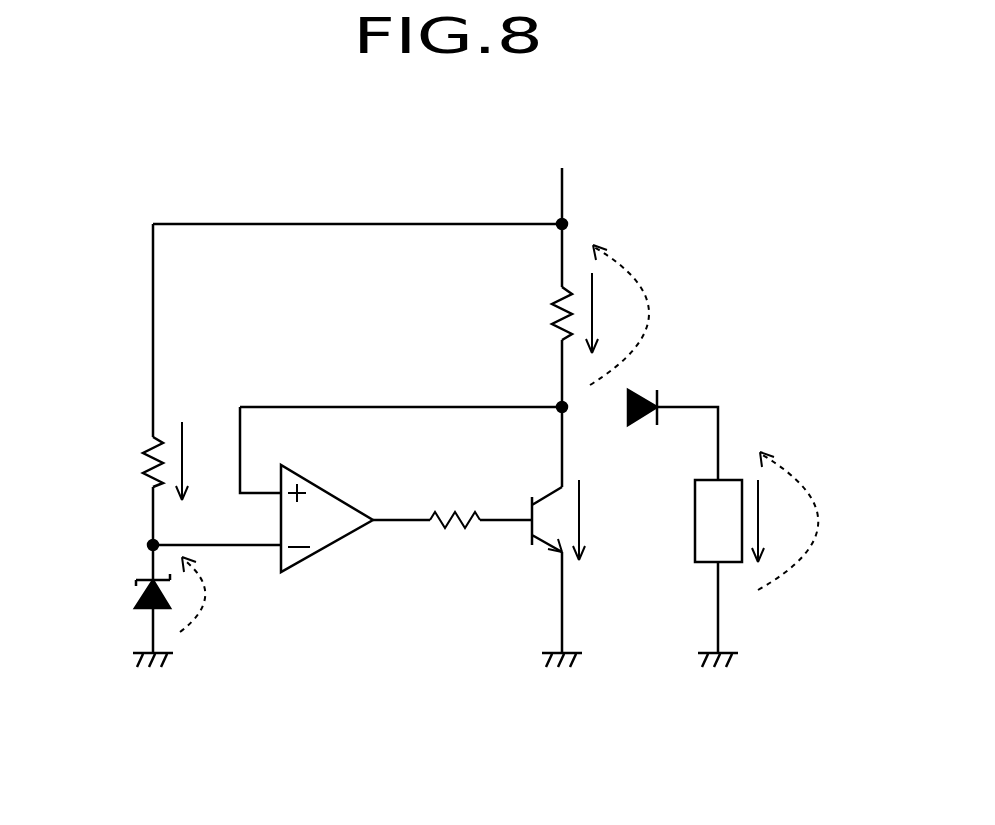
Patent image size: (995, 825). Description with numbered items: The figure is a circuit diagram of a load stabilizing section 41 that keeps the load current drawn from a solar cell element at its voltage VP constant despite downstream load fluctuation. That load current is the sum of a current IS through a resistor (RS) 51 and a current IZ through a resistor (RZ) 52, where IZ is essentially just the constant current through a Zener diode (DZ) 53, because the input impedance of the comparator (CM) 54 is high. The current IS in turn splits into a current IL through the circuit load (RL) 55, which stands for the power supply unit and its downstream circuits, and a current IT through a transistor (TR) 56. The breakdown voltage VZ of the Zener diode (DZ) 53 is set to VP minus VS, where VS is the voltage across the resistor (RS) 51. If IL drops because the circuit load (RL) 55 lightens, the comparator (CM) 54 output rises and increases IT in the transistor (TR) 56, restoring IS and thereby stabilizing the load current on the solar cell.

The load stabilizing section 41 is at (407, 733).
The resistor (RS) 51 is at (548, 318).
The resistor (RZ) 52 is at (140, 463).
The Zener diode (DZ) 53 is at (136, 598).
The comparator (CM) 54 is at (322, 488).
The circuit load (RL) 55 is at (728, 478).
The transistor (TR) 56 is at (531, 503).